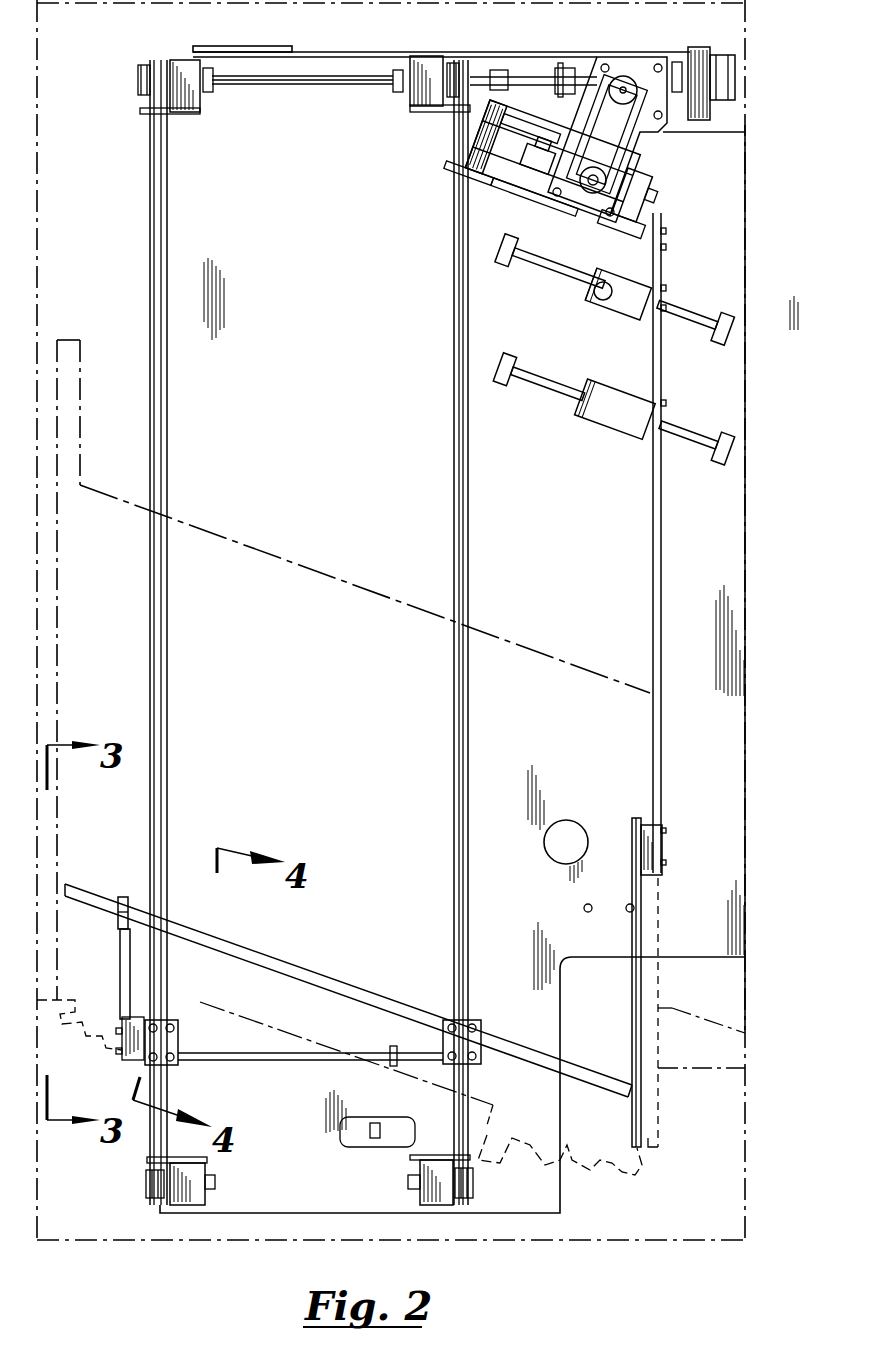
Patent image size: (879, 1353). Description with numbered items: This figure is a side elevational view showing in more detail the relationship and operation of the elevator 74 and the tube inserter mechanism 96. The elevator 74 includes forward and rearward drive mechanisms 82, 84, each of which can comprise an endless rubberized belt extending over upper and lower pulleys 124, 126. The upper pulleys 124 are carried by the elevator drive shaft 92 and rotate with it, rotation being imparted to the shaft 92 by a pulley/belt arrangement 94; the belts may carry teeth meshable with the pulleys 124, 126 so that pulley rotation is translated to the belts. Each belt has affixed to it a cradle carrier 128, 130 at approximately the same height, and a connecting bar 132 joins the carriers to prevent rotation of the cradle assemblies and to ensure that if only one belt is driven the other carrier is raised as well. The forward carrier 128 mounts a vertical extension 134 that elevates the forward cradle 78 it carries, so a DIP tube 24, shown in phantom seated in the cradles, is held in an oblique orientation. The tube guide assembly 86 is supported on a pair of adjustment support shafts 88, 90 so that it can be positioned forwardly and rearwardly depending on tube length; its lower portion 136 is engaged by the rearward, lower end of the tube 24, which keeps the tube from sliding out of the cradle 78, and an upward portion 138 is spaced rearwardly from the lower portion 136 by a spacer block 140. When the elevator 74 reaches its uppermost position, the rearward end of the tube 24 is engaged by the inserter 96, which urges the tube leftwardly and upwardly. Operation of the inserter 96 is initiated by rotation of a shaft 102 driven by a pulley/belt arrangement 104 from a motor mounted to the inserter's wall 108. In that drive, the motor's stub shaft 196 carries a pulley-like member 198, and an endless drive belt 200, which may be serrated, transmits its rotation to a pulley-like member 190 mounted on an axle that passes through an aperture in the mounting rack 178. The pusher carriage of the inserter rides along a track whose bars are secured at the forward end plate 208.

The DIP tube 24 is at (345, 962).
The elevator 74 is at (450, 222).
The forward cradle 78 is at (120, 898).
The forward drive mechanism 82 is at (167, 430).
The rearward drive mechanism 84 is at (448, 432).
The tube guide assembly 86 is at (648, 568).
The adjustment support shaft 88 is at (550, 272).
The adjustment support shaft 90 is at (545, 400).
The elevator drive shaft 92 is at (262, 90).
The pulley/belt arrangement 94 is at (735, 75).
The tube inserter mechanism 96 is at (508, 100).
The shaft 102 is at (550, 195).
The pulley/belt arrangement 104 is at (630, 138).
The wall 108 is at (630, 65).
The upper pulley 124 is at (160, 68).
The lower pulley 126 is at (157, 1200).
The forward cradle carrier 128 is at (170, 1020).
The rearward cradle carrier 130 is at (477, 1025).
The connecting bar 132 is at (302, 1066).
The vertical extension 134 is at (128, 975).
The lower portion 136 is at (641, 925).
The upward portion 138 is at (663, 760).
The spacer block 140 is at (651, 825).
The mounting rack 178 is at (478, 163).
The pulley-like member 190 is at (592, 196).
The stub shaft 196 is at (612, 94).
The pulley-like member 198 is at (623, 76).
The endless drive belt 200 is at (640, 150).
The forward end plate 208 is at (478, 128).